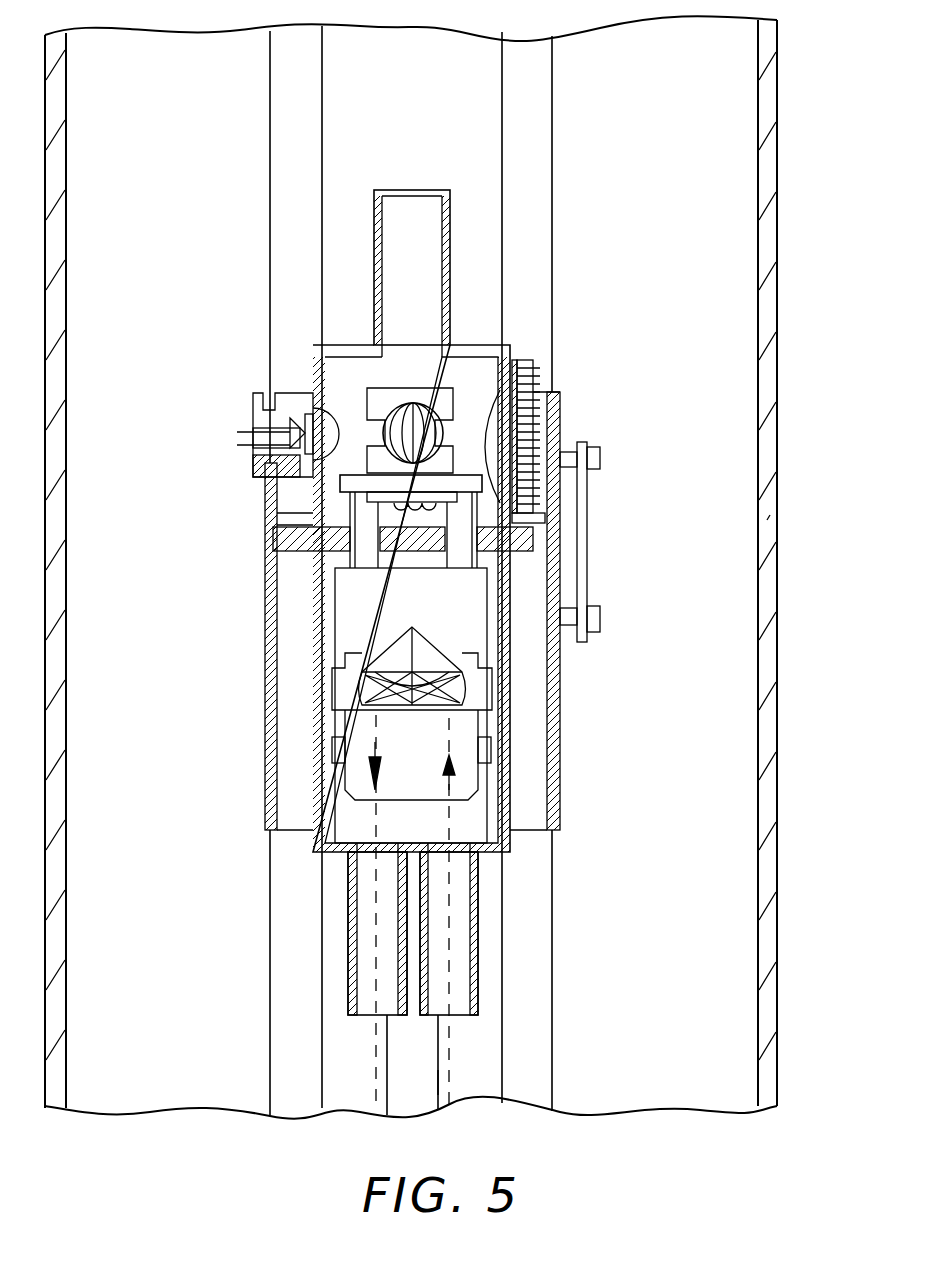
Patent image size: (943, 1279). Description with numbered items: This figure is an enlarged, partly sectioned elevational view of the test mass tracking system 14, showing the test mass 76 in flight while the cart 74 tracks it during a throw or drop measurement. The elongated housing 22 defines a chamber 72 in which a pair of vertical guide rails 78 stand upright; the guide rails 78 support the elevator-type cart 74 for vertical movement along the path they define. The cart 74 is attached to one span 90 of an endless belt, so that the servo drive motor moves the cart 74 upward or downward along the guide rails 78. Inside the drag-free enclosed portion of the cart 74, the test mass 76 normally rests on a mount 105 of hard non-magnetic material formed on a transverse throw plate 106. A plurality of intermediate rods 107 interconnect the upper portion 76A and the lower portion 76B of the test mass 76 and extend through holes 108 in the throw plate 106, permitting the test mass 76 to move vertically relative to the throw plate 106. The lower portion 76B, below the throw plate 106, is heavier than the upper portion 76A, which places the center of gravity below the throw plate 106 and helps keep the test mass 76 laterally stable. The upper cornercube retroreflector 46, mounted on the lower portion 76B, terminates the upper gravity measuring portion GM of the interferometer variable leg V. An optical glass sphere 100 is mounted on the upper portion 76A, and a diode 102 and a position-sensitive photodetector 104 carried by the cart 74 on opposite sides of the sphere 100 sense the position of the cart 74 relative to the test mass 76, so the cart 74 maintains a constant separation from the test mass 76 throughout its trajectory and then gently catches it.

The test mass tracking system 14 is at (811, 105).
The housing 22 is at (781, 540).
The upper cornercube retroreflector 46 is at (423, 642).
The chamber 72 is at (170, 228).
The cart 74 is at (263, 656).
The test mass 76 is at (328, 612).
The upper portion of test mass 76A is at (330, 482).
The lower portion of test mass 76B is at (341, 782).
The vertical guide rails 78 is at (270, 1020).
The belt span 90 is at (441, 1050).
The optical glass sphere 100 is at (430, 404).
The diode 102 is at (318, 406).
The position-sensitive photodetector 104 is at (542, 380).
The mount 105 is at (440, 524).
The throw plate 106 is at (320, 507).
The intermediate rods 107 is at (275, 563).
The holes 108 is at (352, 524).
The gravity measuring portion GM is at (455, 900).
The variable leg V is at (441, 1084).